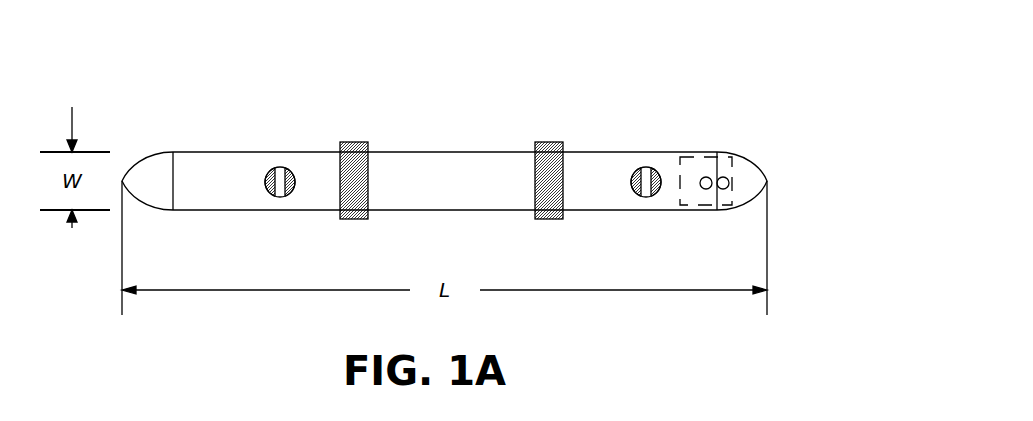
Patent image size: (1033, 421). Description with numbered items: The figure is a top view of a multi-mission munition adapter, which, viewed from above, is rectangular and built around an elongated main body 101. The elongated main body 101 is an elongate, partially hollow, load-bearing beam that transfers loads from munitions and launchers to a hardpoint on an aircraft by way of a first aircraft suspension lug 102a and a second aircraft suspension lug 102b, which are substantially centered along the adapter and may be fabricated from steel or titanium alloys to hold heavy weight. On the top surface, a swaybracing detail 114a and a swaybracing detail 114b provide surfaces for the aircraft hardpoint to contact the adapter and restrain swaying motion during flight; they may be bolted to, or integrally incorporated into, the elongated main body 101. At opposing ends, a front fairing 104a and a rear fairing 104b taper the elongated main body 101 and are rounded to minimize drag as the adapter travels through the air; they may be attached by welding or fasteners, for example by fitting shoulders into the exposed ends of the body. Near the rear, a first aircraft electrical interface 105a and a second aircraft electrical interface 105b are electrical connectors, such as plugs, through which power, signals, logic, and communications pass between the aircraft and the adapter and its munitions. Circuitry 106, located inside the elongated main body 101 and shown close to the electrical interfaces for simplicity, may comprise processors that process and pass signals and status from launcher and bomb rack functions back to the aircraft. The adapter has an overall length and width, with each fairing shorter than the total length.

The elongated main body 101 is at (440, 152).
The first aircraft suspension lug 102a is at (281, 167).
The second aircraft suspension lug 102b is at (641, 168).
The front fairing 104a is at (165, 152).
The rear fairing 104b is at (768, 181).
The first aircraft electrical interface 105a is at (702, 177).
The second aircraft electrical interface 105b is at (725, 177).
The circuitry 106 is at (662, 216).
The swaybracing detail 114a is at (340, 140).
The swaybracing detail 114b is at (535, 140).